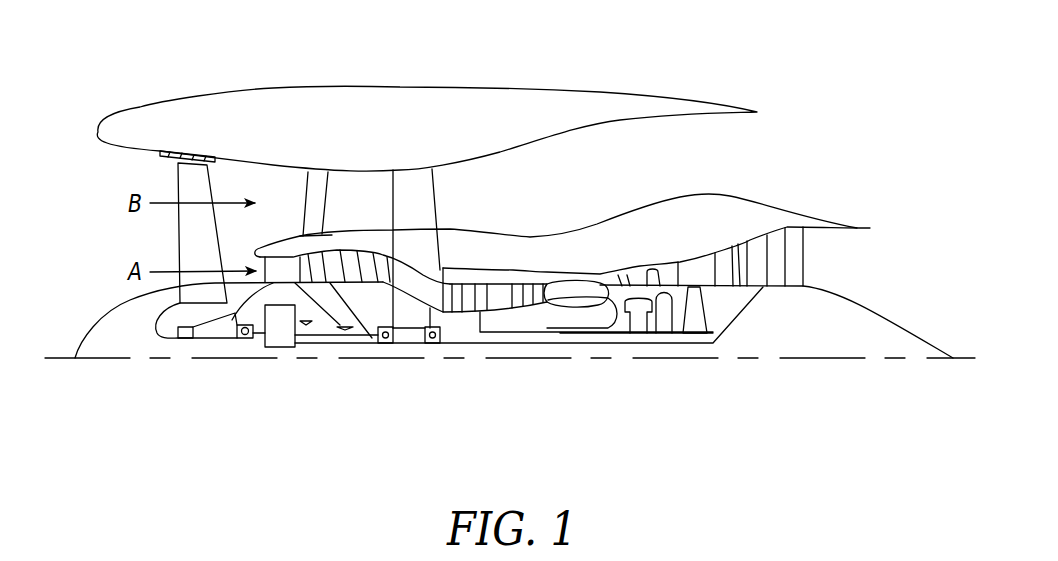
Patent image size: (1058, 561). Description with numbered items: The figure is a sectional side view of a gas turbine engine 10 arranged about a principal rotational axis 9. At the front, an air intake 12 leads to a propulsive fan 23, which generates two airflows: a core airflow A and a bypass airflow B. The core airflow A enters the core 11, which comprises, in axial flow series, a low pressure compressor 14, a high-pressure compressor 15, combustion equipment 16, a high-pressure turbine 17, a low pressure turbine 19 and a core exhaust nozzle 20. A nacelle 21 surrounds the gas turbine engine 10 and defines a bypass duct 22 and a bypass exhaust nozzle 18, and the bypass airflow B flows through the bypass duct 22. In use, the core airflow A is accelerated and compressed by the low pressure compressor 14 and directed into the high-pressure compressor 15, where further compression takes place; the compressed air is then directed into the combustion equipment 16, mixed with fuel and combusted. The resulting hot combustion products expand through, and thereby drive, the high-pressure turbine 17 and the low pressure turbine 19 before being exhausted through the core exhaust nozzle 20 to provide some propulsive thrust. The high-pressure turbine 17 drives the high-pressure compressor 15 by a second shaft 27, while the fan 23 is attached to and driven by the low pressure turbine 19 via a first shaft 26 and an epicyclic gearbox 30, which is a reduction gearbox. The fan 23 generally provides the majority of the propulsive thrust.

The principal rotational axis 9 is at (748, 362).
The gas turbine engine 10 is at (178, 103).
The core 11 is at (545, 256).
The air intake 12 is at (155, 242).
The low pressure compressor 14 is at (350, 262).
The high-pressure compressor 15 is at (497, 293).
The combustion equipment 16 is at (571, 300).
The high-pressure turbine 17 is at (627, 278).
The bypass exhaust nozzle 18 is at (760, 152).
The low pressure turbine 19 is at (777, 249).
The core exhaust nozzle 20 is at (840, 259).
The nacelle 21 is at (408, 100).
The bypass duct 22 is at (701, 167).
The propulsive fan 23 is at (178, 235).
The first shaft 26 is at (492, 347).
The second shaft 27 is at (536, 333).
The epicyclic gearbox 30 is at (280, 337).